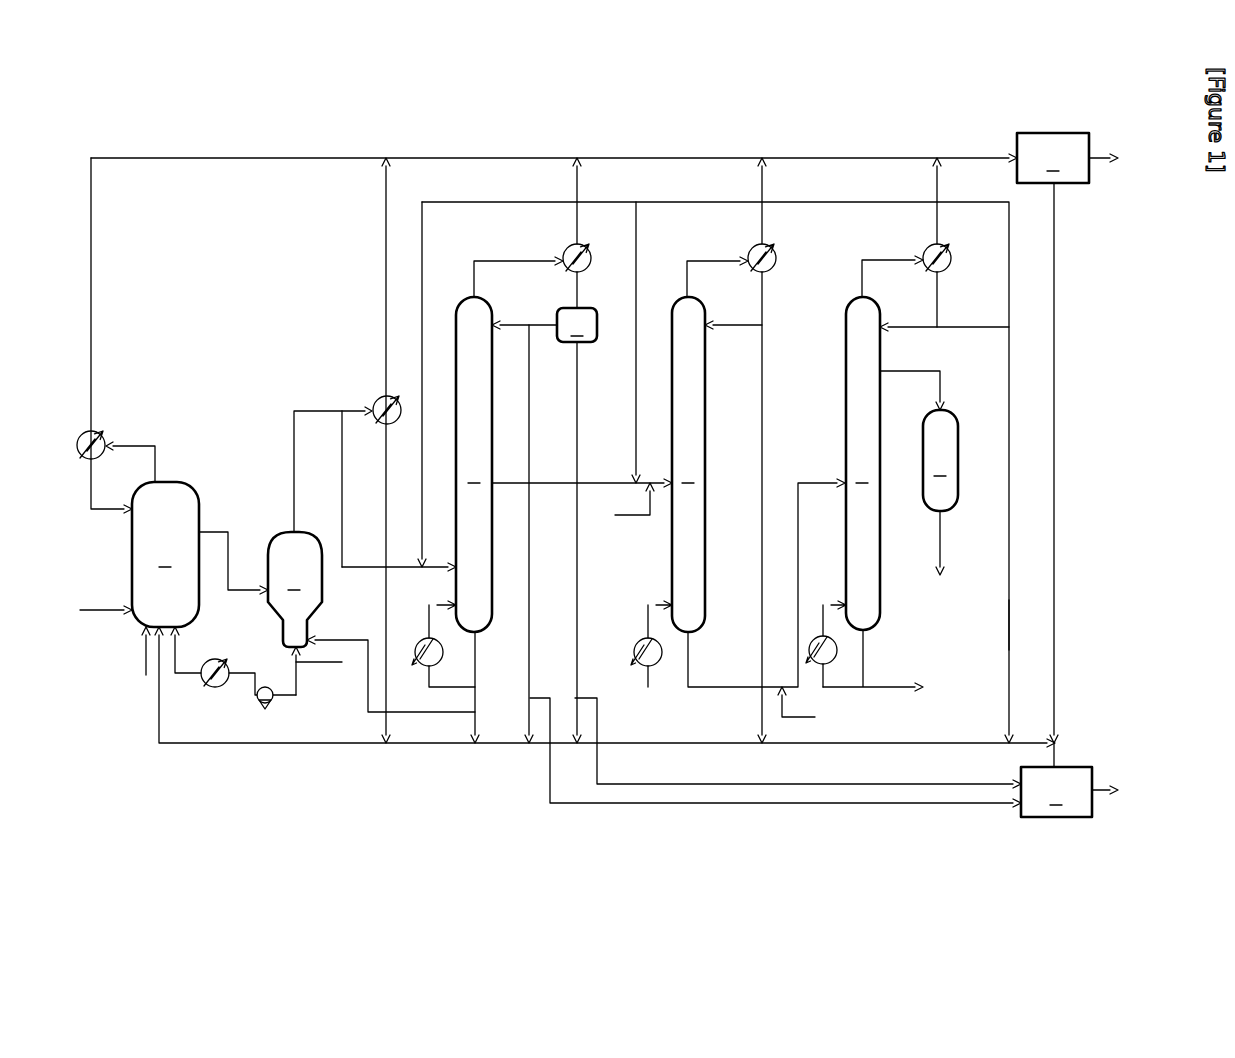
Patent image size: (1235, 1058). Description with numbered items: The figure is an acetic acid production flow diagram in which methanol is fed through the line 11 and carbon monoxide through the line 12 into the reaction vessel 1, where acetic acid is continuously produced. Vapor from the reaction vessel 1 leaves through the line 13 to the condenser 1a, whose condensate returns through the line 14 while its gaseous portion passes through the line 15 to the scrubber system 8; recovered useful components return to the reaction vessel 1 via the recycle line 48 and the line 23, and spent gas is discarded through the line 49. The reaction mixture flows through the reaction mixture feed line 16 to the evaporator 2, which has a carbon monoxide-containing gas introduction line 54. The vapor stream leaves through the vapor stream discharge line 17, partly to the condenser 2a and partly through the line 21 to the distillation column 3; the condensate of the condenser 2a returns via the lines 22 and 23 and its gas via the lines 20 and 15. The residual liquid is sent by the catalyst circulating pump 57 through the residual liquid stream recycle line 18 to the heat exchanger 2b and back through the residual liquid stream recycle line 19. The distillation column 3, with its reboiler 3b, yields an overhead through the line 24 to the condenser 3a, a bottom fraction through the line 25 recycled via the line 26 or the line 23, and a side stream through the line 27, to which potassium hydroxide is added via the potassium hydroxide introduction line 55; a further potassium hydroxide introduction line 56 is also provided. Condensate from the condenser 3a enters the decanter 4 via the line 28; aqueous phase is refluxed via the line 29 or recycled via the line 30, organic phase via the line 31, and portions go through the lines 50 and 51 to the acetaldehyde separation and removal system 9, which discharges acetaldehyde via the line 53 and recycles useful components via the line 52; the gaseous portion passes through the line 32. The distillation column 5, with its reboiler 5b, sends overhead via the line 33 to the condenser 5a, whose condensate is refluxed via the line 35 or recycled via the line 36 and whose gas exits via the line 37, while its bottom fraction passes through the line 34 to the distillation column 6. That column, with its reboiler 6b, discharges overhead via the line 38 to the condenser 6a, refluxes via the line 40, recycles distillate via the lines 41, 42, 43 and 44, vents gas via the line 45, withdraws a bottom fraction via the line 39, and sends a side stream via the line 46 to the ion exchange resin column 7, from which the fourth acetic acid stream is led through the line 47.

The reaction vessel 1 is at (165, 554).
The condenser 1a is at (80, 433).
The evaporator 2 is at (295, 589).
The condenser 2a is at (374, 396).
The heat exchanger 2b is at (204, 690).
The distillation column 3 is at (474, 464).
The condenser 3a is at (592, 254).
The reboiler 3b is at (420, 638).
The decanter 4 is at (577, 325).
The distillation column 5 is at (688, 464).
The condenser 5a is at (776, 256).
The reboiler 5b is at (638, 638).
The distillation column 6 is at (863, 463).
The condenser 6a is at (960, 256).
The reboiler 6b is at (816, 636).
The ion exchange resin column 7 is at (940, 460).
The scrubber system 8 is at (1053, 158).
The acetaldehyde separation and removal system 9 is at (1056, 792).
The line 11 is at (104, 608).
The line 12 is at (146, 658).
The line 13 is at (133, 445).
The line 14 is at (86, 483).
The line 15 is at (264, 156).
The reaction mixture feed line 16 is at (238, 552).
The vapor stream discharge line 17 is at (292, 456).
The residual liquid stream recycle line 18 is at (298, 698).
The residual liquid stream recycle line 19 is at (176, 666).
The line 20 is at (372, 248).
The line 21 is at (364, 560).
The line 22 is at (354, 484).
The line 23 is at (330, 746).
The line 24 is at (512, 262).
The line 25 is at (476, 700).
The line 26 is at (340, 636).
The line 27 is at (590, 482).
The line 28 is at (580, 294).
The line 29 is at (544, 320).
The line 30 is at (532, 456).
The line 31 is at (580, 386).
The line 32 is at (580, 192).
The line 33 is at (700, 252).
The line 34 is at (722, 684).
The line 35 is at (766, 304).
The line 36 is at (768, 408).
The line 37 is at (766, 192).
The line 38 is at (880, 256).
The line 39 is at (890, 686).
The line 40 is at (940, 312).
The line 41 is at (1010, 282).
The line 42 is at (656, 290).
The line 43 is at (442, 290).
The line 44 is at (1010, 403).
The line 45 is at (940, 192).
The line 46 is at (900, 372).
The line 47 is at (936, 554).
The recycle line 48 is at (1060, 403).
The line 49 is at (1106, 150).
The line 50 is at (740, 784).
The line 51 is at (740, 806).
The line 52 is at (1058, 758).
The line 53 is at (1104, 782).
The carbon monoxide-containing gas introduction line 54 is at (320, 664).
The potassium hydroxide introduction line 55 is at (634, 518).
The potassium hydroxide introduction line 56 is at (804, 722).
The catalyst circulating pump 57 is at (256, 702).